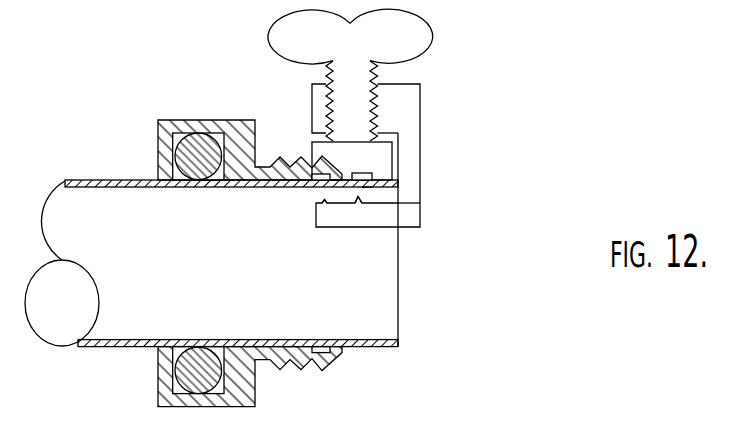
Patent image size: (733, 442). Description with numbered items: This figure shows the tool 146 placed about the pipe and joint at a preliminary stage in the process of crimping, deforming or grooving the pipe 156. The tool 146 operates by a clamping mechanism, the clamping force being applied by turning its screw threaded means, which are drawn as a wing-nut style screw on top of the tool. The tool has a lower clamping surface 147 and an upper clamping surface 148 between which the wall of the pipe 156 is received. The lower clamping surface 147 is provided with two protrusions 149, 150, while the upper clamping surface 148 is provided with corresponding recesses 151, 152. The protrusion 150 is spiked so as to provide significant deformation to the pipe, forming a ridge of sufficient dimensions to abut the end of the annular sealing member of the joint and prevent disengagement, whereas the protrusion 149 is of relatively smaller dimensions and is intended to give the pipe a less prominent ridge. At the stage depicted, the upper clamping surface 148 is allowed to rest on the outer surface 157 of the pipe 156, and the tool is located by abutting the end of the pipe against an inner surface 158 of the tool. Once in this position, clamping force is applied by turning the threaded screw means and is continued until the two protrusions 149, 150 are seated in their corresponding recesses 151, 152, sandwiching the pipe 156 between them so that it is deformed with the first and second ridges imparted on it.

The tool 146 is at (420, 105).
The lower clamping surface 147 is at (412, 223).
The upper clamping surface 148 is at (380, 157).
The protrusion 149 is at (322, 205).
The protrusion 150 is at (358, 200).
The recess 151 is at (367, 186).
The recess 152 is at (317, 184).
The pipe 156 is at (372, 319).
The outer surface 157 is at (398, 182).
The inner surface 158 is at (398, 197).